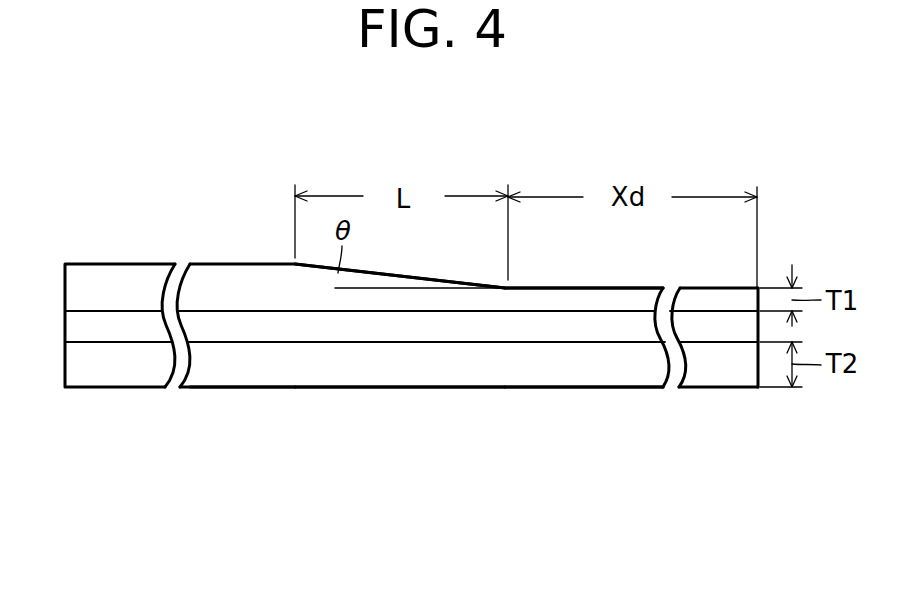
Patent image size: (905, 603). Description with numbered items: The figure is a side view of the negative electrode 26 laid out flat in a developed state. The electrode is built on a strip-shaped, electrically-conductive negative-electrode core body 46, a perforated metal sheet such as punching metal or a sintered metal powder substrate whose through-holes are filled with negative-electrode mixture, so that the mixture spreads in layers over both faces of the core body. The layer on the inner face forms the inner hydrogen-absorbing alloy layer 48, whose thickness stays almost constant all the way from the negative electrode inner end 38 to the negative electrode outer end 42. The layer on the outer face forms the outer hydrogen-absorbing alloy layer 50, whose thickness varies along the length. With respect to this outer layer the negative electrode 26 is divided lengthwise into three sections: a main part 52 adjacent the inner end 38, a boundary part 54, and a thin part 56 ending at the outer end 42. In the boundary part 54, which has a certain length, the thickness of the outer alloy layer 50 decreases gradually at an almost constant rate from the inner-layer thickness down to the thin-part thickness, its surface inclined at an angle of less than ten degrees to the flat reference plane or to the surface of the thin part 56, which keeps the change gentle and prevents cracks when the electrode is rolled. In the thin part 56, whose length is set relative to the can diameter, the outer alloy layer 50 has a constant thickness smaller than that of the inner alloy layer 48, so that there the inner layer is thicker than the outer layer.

The negative electrode 26 is at (712, 158).
The negative electrode inner end 38 is at (85, 383).
The negative electrode outer end 42 is at (745, 377).
The negative-electrode core body 46 is at (730, 325).
The inner hydrogen-absorbing alloy layer 48 is at (702, 377).
The outer hydrogen-absorbing alloy layer 50 is at (695, 295).
The main part 52 is at (240, 383).
The boundary part 54 is at (405, 373).
The thin part 56 is at (573, 373).